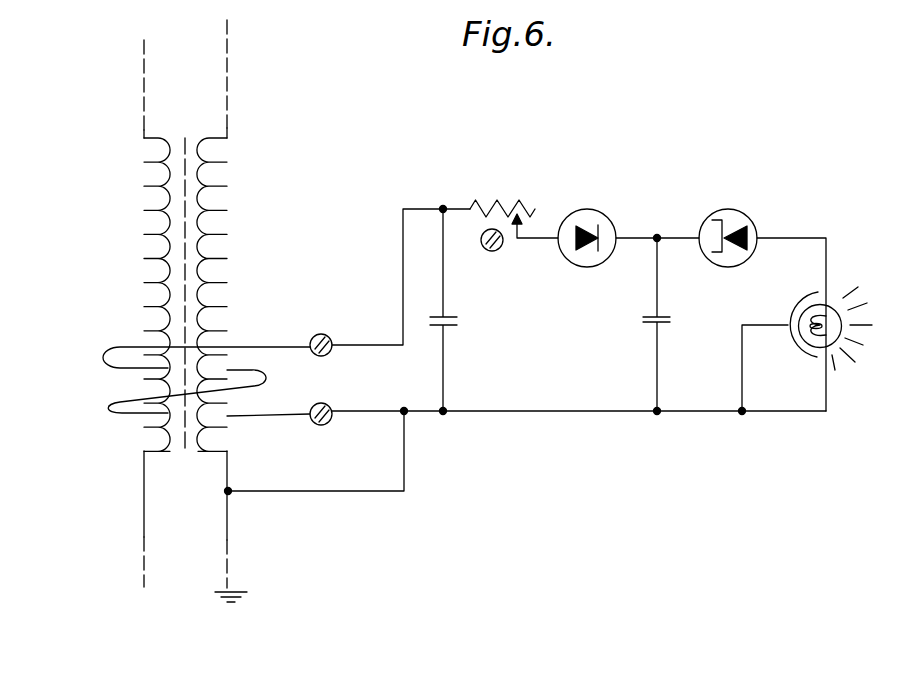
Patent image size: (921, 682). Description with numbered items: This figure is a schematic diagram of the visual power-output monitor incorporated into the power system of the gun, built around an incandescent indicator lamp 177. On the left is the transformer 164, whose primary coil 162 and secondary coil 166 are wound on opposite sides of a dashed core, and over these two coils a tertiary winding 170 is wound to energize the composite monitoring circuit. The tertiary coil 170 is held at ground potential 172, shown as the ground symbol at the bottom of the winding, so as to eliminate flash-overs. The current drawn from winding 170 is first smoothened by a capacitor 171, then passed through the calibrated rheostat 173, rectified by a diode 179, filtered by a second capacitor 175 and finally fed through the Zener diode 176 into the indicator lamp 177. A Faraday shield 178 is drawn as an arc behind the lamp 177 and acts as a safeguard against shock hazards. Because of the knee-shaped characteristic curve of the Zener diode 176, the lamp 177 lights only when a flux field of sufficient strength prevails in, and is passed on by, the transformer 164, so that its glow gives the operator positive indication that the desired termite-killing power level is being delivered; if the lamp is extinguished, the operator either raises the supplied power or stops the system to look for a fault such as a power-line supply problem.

The primary coil 162 is at (147, 262).
The transformer 164 is at (187, 134).
The secondary coil 166 is at (224, 307).
The tertiary winding 170 is at (110, 404).
The capacitor 171 is at (460, 322).
The ground potential 172 is at (240, 588).
The calibrated rheostat 173 is at (512, 203).
The capacitor 175 is at (645, 321).
The Zener diode 176 is at (735, 204).
The indicator lamp 177 is at (837, 288).
The Faraday shield 178 is at (813, 355).
The diode 179 is at (594, 209).